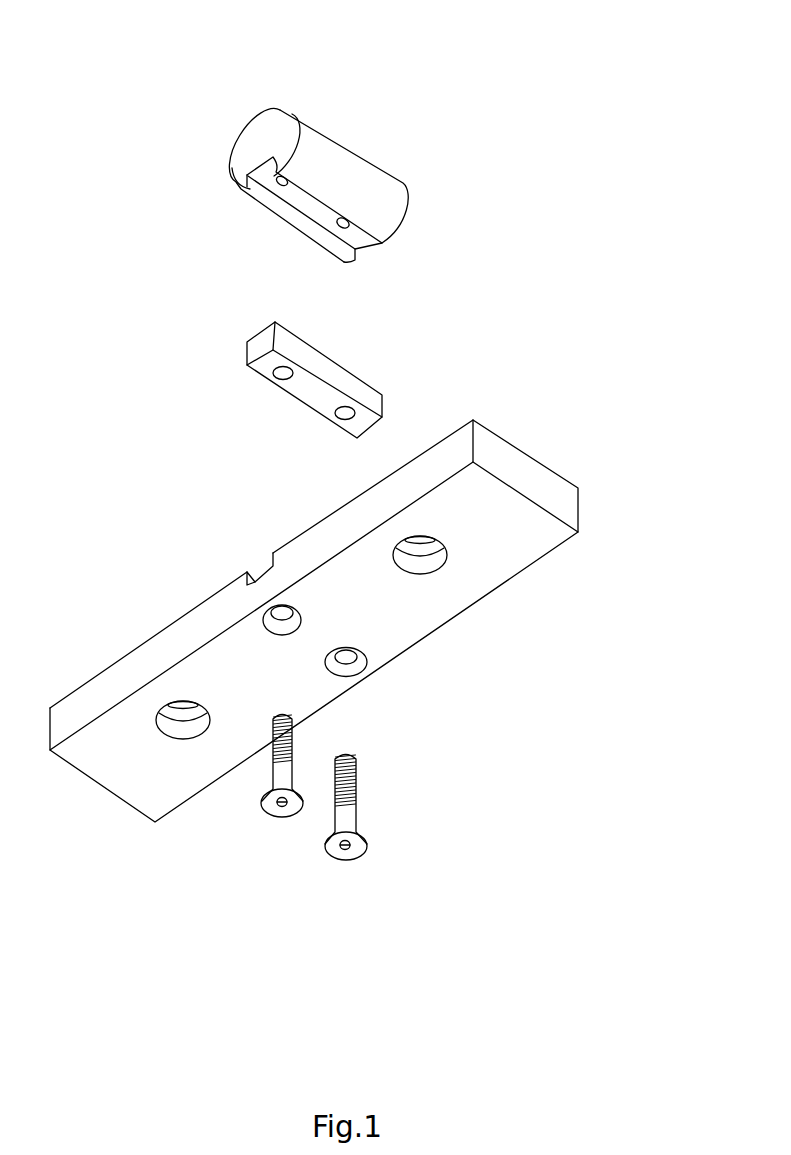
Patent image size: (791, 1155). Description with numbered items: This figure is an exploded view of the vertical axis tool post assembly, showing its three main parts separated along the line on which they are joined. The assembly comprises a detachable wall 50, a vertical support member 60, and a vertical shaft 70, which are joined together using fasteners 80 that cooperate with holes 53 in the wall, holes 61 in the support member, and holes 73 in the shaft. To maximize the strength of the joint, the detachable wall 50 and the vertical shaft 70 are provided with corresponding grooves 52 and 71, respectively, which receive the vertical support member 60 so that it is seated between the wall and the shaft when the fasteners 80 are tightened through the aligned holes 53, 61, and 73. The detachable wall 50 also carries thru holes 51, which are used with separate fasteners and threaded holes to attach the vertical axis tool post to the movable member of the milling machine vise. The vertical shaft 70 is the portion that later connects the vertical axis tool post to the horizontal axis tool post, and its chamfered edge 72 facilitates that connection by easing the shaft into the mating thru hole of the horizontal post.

The detachable wall 50 is at (347, 664).
The thru holes 51 is at (190, 720).
The groove 52 is at (258, 565).
The holes 53 is at (283, 615).
The vertical support member 60 is at (325, 384).
The holes 61 is at (280, 375).
The vertical shaft 70 is at (302, 162).
The groove 71 is at (258, 193).
The chamfered edge 72 is at (293, 110).
The holes 73 is at (280, 182).
The fasteners 80 is at (357, 857).